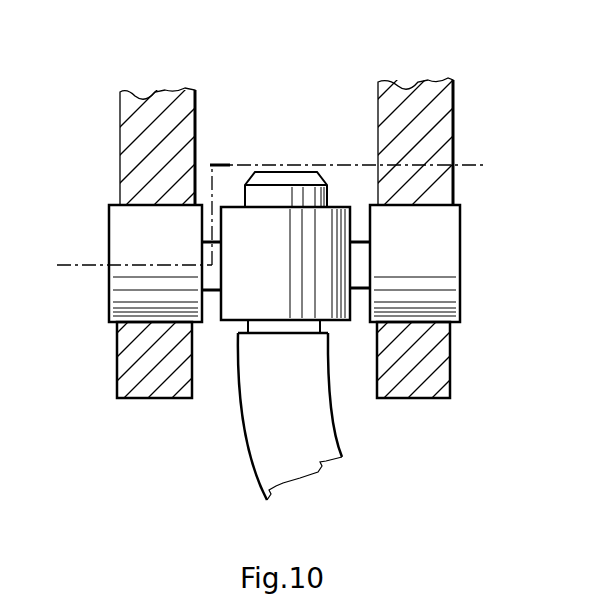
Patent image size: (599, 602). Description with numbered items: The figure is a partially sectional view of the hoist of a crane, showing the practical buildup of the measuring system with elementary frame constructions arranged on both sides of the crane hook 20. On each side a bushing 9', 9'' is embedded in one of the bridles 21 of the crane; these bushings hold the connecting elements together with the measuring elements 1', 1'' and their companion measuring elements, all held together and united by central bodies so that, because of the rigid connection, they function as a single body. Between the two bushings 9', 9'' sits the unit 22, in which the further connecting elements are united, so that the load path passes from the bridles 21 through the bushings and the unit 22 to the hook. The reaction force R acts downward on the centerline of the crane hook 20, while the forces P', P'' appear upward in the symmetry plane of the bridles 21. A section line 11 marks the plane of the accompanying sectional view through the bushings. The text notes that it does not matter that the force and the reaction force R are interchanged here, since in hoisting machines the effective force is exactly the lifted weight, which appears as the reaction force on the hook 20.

The unit 22 is at (303, 228).
The section line 11 is at (43, 238).
The bushing 9'' is at (139, 265).
The bushing 9' is at (433, 265).
The bridles 21 is at (125, 377).
The measuring element 1'' is at (214, 308).
The measuring element 1' is at (360, 305).
The crane hook 20 is at (337, 447).
The force P'' is at (171, 85).
The force P' is at (433, 75).
The reaction force R is at (283, 403).